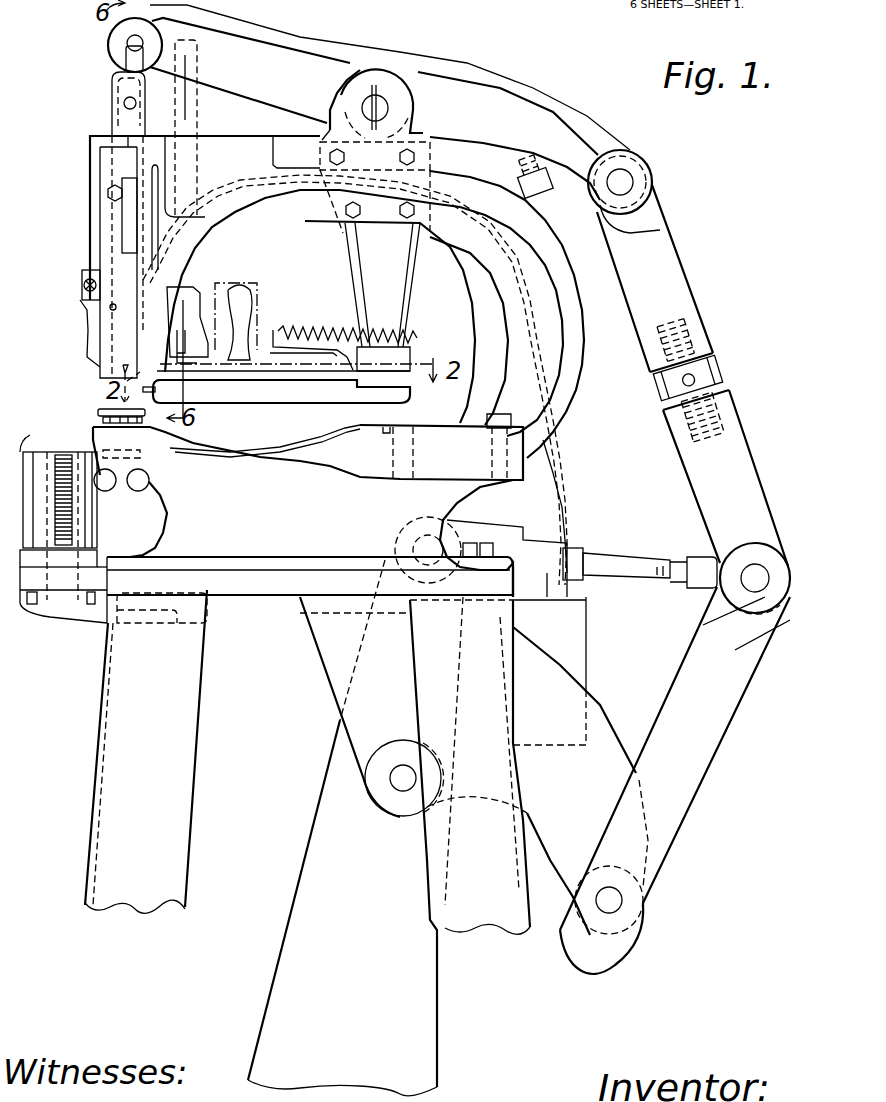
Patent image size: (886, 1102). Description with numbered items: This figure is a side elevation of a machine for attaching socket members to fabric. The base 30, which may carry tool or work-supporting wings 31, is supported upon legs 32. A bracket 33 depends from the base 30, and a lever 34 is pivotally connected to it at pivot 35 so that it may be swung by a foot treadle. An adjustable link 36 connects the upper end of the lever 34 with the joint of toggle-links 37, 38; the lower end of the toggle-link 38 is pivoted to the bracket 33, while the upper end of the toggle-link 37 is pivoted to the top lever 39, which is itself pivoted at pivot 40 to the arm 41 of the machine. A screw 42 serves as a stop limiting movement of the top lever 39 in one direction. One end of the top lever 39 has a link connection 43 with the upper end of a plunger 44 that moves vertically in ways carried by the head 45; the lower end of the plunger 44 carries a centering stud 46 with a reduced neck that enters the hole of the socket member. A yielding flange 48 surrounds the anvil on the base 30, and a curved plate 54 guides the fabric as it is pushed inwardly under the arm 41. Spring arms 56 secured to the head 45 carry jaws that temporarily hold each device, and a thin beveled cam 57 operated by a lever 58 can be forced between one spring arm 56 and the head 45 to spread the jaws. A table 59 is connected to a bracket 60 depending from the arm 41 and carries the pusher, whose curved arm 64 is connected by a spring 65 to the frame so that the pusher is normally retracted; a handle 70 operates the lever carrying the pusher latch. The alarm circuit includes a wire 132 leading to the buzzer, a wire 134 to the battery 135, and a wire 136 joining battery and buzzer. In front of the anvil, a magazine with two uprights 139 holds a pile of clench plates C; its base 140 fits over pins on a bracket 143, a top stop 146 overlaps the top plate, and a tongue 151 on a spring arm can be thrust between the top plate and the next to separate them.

The base 30 is at (308, 485).
The tool or work-supporting wings 31 is at (268, 585).
The legs 32 is at (193, 685).
The bracket 33 is at (608, 738).
The lever 34 is at (308, 889).
The pivot 35 is at (400, 777).
The adjustable link 36 is at (642, 567).
The toggle-link 37 is at (683, 297).
The toggle-link 38 is at (706, 733).
The top lever 39 is at (533, 97).
The pivot 40 is at (375, 107).
The arm 41 is at (300, 217).
The screw 42 is at (590, 230).
The link connection 43 is at (130, 63).
The plunger 44 is at (117, 117).
The head 45 is at (90, 213).
The centering stud 46 is at (123, 363).
The yielding flange 48 is at (100, 410).
The curved plate 54 is at (300, 437).
The spring arms 56 is at (125, 367).
The cam 57 is at (82, 273).
The lever 58 is at (83, 310).
The table 59 is at (257, 393).
The bracket 60 is at (382, 297).
The curved arm 64 is at (313, 350).
The spring 65 is at (293, 330).
The handle 70 is at (243, 300).
The wire 132 is at (185, 270).
The wire 134 is at (210, 203).
The battery 135 is at (567, 627).
The wire 136 is at (210, 273).
The uprights 139 is at (42, 512).
The base 140 is at (43, 580).
The bracket 143 is at (85, 617).
The top stop 146 is at (67, 452).
The blade or tongue 151 is at (33, 452).
The clench plate C is at (30, 452).